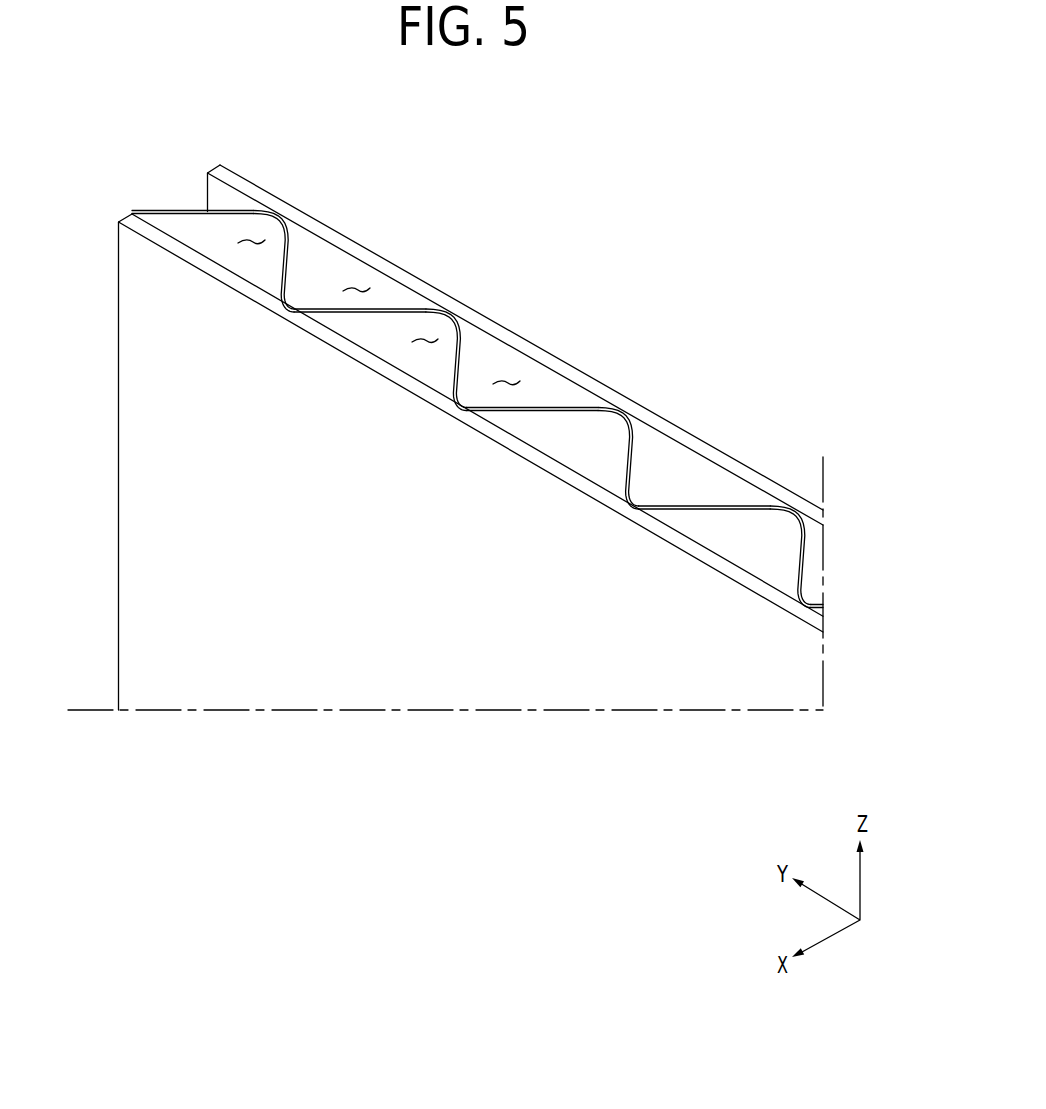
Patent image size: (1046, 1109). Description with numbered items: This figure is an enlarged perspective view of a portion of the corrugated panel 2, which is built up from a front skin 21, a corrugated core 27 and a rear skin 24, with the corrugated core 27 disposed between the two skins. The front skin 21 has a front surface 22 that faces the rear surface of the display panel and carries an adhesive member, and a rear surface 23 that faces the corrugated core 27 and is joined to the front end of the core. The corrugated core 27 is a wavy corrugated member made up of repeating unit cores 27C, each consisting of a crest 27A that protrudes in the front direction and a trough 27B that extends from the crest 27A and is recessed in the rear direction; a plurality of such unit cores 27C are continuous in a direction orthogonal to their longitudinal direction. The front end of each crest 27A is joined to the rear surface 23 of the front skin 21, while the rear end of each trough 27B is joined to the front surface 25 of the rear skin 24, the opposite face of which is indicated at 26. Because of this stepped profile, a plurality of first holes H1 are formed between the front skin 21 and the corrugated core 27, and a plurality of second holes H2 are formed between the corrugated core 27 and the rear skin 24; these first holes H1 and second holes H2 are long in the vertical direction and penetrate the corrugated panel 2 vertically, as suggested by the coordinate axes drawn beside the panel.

The corrugated panel 2 is at (129, 158).
The front skin 21 is at (198, 265).
The front surface of the front skin 22 is at (150, 389).
The rear surface of the front skin 23 is at (257, 290).
The rear skin 24 is at (343, 247).
The front surface of the rear skin 25 is at (673, 468).
The bar upper surface 26 is at (682, 430).
The corrugated core 27 is at (698, 817).
The crest 27A is at (492, 416).
The trough 27B is at (613, 427).
The unit core 27C is at (562, 776).
The first holes H1 is at (253, 240).
The second holes H2 is at (357, 287).